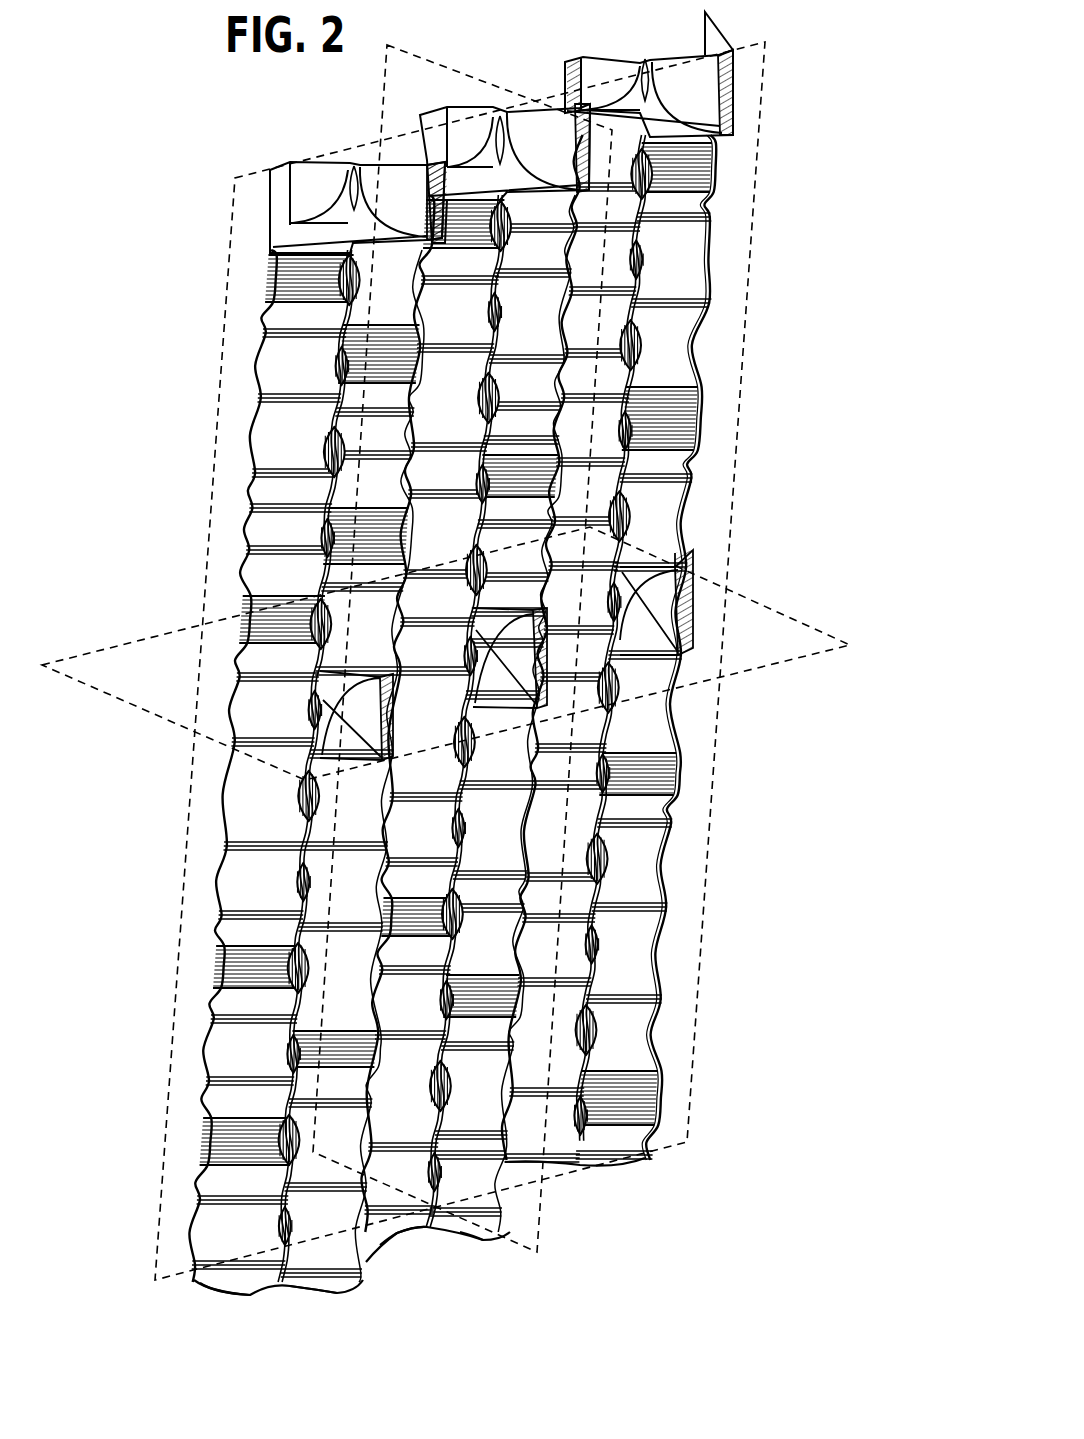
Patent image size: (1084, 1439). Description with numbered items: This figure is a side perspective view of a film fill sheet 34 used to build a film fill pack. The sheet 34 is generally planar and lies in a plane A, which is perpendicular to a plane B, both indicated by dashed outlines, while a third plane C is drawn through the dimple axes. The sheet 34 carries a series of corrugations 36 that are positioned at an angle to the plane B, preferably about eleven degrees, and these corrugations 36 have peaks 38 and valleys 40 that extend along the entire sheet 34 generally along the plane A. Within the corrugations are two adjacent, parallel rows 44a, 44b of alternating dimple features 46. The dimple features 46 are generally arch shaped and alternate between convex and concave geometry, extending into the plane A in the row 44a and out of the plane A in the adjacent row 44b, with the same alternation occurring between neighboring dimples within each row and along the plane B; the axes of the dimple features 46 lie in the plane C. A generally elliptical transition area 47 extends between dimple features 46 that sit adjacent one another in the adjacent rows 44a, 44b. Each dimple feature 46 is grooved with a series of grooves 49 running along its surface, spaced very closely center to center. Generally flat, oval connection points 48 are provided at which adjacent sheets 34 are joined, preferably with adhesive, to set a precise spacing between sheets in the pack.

The film fill sheet 34 is at (268, 125).
The corrugations 36 is at (650, 57).
The peaks 38 is at (588, 118).
The valleys 40 is at (430, 112).
The row of dimple features 44a is at (413, 1300).
The row of dimple features 44b is at (510, 1298).
The dimple features 46 is at (250, 832).
The transition area 47 is at (330, 645).
The connection points 48 is at (345, 782).
The grooves 49 is at (240, 1160).
The plane A is at (690, 1122).
The plane B is at (428, 58).
The plane C is at (103, 652).